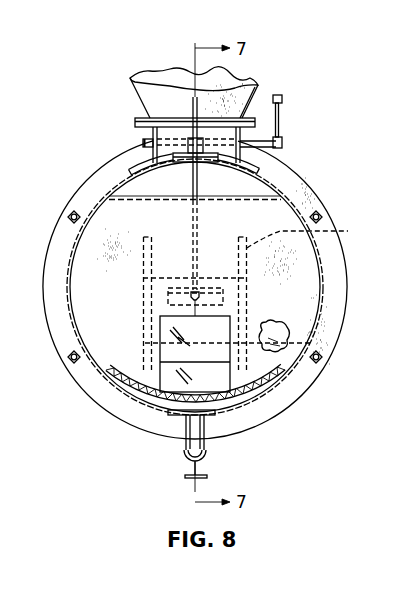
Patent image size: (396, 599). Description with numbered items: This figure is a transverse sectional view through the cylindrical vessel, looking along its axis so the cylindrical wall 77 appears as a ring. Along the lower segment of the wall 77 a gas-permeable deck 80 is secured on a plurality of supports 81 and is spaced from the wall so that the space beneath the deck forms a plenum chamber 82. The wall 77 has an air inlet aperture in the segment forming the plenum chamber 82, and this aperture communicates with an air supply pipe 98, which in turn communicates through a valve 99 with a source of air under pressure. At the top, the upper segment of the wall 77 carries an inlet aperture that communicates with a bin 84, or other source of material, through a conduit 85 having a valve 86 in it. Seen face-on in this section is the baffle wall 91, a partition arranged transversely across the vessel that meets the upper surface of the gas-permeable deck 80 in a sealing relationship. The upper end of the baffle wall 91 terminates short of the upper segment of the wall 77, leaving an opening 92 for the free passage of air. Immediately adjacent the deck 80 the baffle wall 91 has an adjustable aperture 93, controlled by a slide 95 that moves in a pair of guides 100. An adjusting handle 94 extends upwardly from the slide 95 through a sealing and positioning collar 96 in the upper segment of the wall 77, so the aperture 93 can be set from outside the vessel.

The cylindrical wall 77 is at (318, 261).
The gas-permeable deck 80 is at (285, 340).
The supports 81 is at (250, 398).
The plenum chamber 82 is at (183, 404).
The bin 84 is at (255, 85).
The conduit 85 is at (152, 128).
The valve 86 is at (143, 143).
The baffle wall 91 is at (274, 212).
The opening 92 is at (242, 185).
The adjustable aperture 93 is at (172, 383).
The adjusting handle 94 is at (192, 102).
The slide 95 is at (222, 330).
The sealing and positioning collar 96 is at (170, 151).
The air supply pipe 98 is at (204, 443).
The valve 99 is at (207, 476).
The guides 100 is at (340, 232).